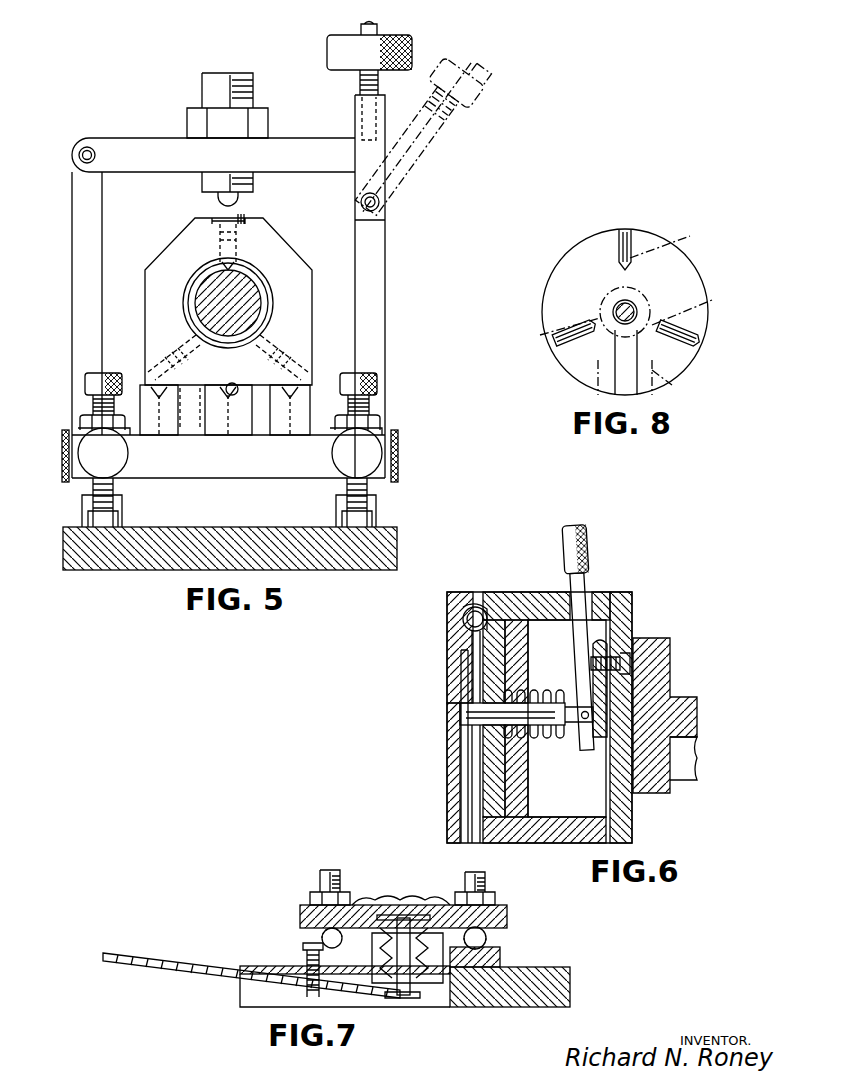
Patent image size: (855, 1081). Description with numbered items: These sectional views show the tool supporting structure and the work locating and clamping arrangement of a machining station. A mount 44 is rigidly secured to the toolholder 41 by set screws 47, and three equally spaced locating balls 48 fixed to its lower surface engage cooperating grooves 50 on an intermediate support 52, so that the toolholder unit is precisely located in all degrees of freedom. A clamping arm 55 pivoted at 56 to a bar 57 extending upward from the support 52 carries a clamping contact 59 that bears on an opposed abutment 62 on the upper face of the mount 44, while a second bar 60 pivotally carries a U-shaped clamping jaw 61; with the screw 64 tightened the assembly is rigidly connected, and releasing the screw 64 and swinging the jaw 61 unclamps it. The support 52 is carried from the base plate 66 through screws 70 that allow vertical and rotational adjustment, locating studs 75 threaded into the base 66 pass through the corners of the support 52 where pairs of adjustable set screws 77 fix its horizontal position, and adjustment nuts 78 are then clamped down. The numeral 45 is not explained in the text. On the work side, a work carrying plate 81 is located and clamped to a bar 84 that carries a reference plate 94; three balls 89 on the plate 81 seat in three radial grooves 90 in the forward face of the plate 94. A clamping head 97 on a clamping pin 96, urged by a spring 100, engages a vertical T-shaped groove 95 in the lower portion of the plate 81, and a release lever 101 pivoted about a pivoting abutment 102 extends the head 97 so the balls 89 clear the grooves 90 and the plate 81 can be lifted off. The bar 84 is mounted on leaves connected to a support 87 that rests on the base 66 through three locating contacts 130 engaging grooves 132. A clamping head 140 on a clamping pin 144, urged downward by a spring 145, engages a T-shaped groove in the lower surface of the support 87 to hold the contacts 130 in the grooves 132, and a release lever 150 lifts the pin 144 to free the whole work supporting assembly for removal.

In FIG. 5, the toolholder 41 is at (248, 305).
In FIG. 5, the mount 44 is at (235, 229).
In FIG. 5, the locating pin 45 is at (300, 320).
In FIG. 5, the set screws 47 is at (148, 300).
In FIG. 5, the locating balls 48 is at (170, 384).
In FIG. 5, the grooves 50 is at (192, 415).
In FIG. 5, the intermediate support 52 is at (228, 466).
In FIG. 5, the clamping arm 55 is at (195, 152).
In FIG. 5, the pivot 56 is at (72, 160).
In FIG. 5, the bar 57 is at (80, 284).
In FIG. 5, the clamping contact 59 is at (245, 206).
In FIG. 5, the second bar 60 is at (372, 256).
In FIG. 5, the U-shaped clamping jaw 61 is at (378, 148).
In FIG. 5, the abutment 62 is at (213, 220).
In FIG. 5, the screw 64 is at (412, 45).
In FIG. 5, the base plate 66 is at (250, 527).
In FIG. 7, the base plate 66 is at (525, 1007).
In FIG. 5, the screws 70 is at (98, 376).
In FIG. 5, the locating studs 75 is at (96, 406).
In FIG. 5, the adjustable set screws 77 is at (66, 458).
In FIG. 5, the adjustment nuts 78 is at (88, 428).
In FIG. 6, the work carrying plate 81 is at (450, 648).
In FIG. 6, the bar 84 is at (680, 690).
In FIG. 7, the support 87 is at (497, 913).
In FIG. 8, the balls 89 is at (628, 286).
In FIG. 6, the balls 89 is at (466, 605).
In FIG. 8, the grooves 90 is at (632, 240).
In FIG. 6, the grooves 90 is at (487, 600).
In FIG. 8, the reference plate 94 is at (585, 250).
In FIG. 6, the reference plate 94 is at (495, 835).
In FIG. 8, the T-shaped groove 95 is at (680, 383).
In FIG. 6, the T-shaped groove 95 is at (462, 800).
In FIG. 8, the clamping pin 96 is at (618, 308).
In FIG. 6, the clamping pin 96 is at (545, 703).
In FIG. 8, the clamping head 97 is at (652, 302).
In FIG. 6, the clamping head 97 is at (458, 714).
In FIG. 6, the spring 100 is at (545, 745).
In FIG. 6, the release lever 101 is at (582, 584).
In FIG. 6, the pivoting abutment 102 is at (612, 642).
In FIG. 7, the locating contacts 130 is at (322, 934).
In FIG. 7, the grooves 132 is at (308, 948).
In FIG. 7, the clamping head 140 is at (388, 915).
In FIG. 7, the clamping pin 144 is at (408, 993).
In FIG. 7, the spring 145 is at (347, 925).
In FIG. 7, the release lever 150 is at (163, 956).